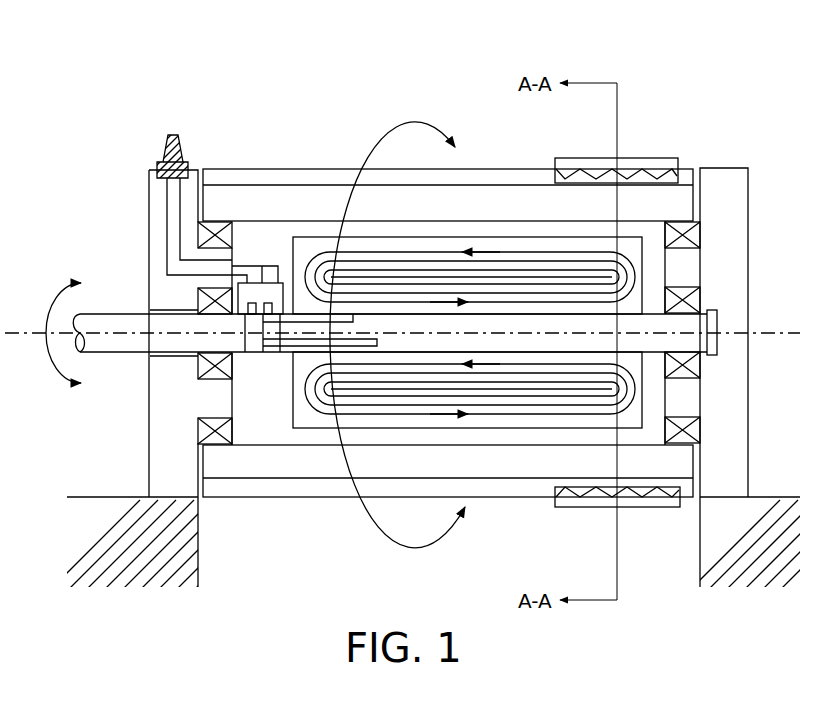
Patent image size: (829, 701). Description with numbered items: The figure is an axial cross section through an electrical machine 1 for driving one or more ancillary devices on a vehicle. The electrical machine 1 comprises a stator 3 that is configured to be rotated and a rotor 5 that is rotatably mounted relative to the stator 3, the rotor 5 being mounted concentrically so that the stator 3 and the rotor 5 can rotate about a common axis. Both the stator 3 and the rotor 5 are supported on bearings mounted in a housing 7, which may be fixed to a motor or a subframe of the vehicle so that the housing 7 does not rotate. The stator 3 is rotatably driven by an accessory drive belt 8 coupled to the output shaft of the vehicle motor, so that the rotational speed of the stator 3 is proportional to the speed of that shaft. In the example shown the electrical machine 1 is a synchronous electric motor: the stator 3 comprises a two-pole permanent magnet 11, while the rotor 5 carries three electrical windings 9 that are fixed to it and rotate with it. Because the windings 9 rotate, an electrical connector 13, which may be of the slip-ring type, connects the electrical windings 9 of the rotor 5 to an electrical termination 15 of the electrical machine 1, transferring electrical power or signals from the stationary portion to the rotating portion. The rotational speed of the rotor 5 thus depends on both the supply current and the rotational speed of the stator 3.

The electrical machine 1 is at (724, 117).
The stator 3 is at (221, 165).
The rotor 5 is at (125, 345).
The housing 7 is at (158, 424).
The accessory drive belt 8 is at (647, 157).
The electrical windings 9 is at (636, 305).
The permanent magnet 11 is at (290, 198).
The electrical connector 13 is at (232, 293).
The electrical termination 15 is at (165, 157).